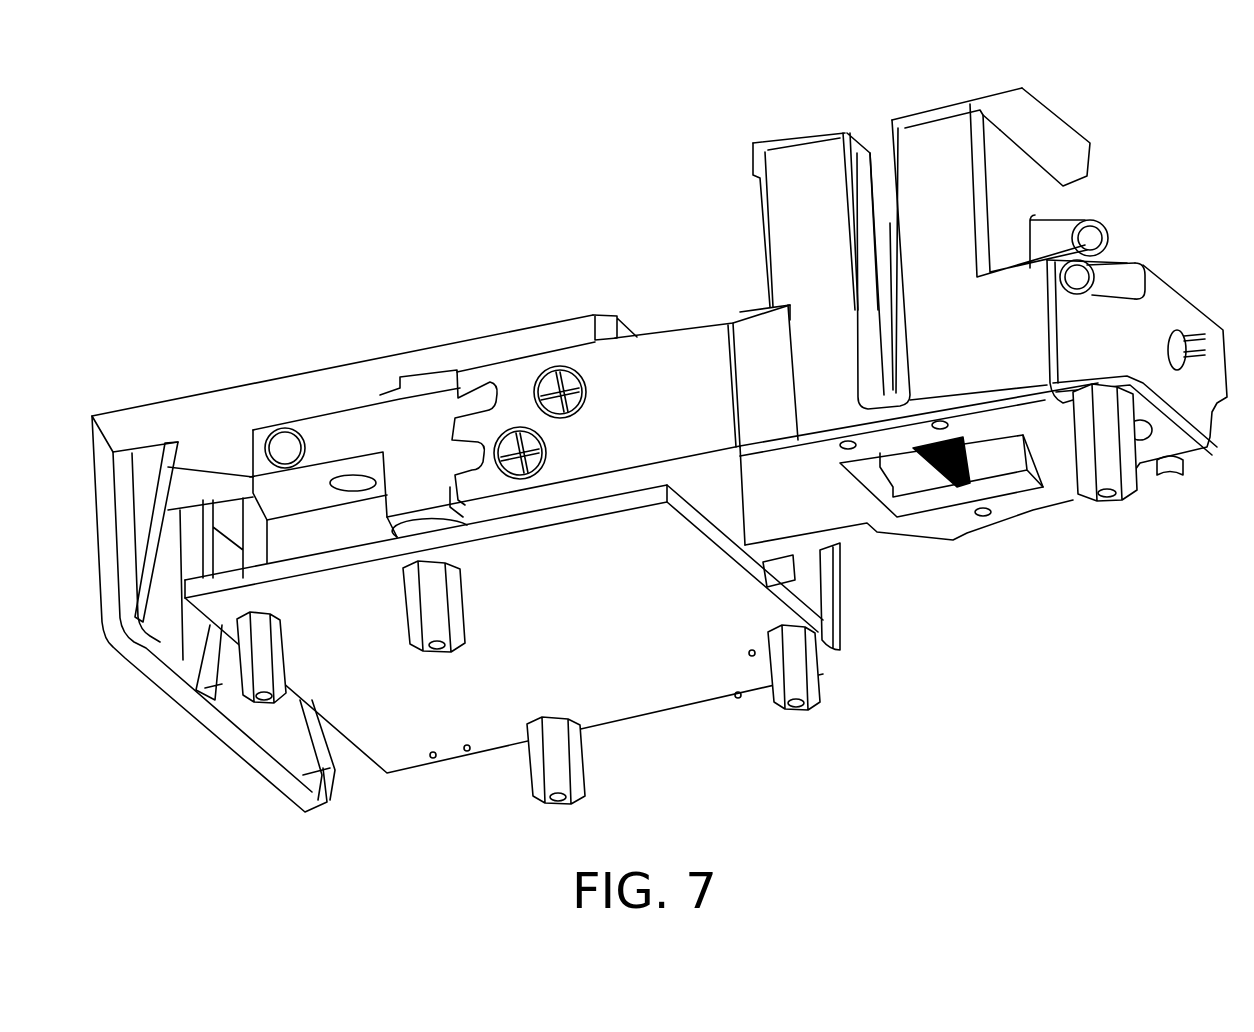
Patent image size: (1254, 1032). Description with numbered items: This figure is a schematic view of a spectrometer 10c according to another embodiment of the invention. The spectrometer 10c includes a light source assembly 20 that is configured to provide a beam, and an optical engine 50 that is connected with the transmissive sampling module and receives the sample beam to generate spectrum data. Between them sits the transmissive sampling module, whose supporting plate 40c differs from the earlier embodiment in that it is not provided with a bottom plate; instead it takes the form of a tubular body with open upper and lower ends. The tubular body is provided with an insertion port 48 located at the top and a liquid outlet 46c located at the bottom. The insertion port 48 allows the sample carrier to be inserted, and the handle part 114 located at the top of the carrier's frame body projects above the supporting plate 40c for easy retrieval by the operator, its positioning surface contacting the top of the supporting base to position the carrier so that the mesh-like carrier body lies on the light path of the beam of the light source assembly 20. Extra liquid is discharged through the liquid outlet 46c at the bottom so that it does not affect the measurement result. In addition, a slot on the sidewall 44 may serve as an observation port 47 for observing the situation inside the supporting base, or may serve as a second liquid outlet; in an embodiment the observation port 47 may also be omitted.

The spectrometer 10c is at (1222, 802).
The light source assembly 20 is at (1173, 300).
The supporting plate 40c is at (674, 477).
The sidewall 44 is at (950, 192).
The liquid outlet 46c is at (905, 512).
The observation port 47 is at (876, 383).
The insertion port 48 is at (910, 122).
The optical engine 50 is at (256, 388).
The handle part 114 is at (1042, 117).